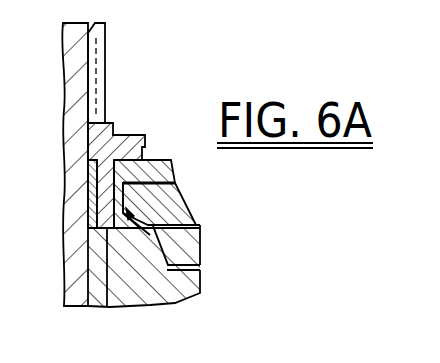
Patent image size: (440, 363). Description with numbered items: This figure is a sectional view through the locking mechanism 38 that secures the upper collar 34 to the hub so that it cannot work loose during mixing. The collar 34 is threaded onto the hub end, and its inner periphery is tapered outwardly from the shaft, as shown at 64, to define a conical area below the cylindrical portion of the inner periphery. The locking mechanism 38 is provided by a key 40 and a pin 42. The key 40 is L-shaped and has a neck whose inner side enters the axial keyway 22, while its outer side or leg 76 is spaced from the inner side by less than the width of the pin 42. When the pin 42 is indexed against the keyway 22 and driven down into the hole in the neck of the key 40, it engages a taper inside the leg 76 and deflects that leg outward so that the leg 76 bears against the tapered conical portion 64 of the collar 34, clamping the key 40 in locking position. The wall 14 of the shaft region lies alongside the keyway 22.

The wall 14 is at (67, 54).
The keyway 22 is at (98, 43).
The locking mechanism 38 is at (165, 147).
The pin 42 is at (120, 140).
The key 40 is at (158, 162).
The tapered inner periphery 64 is at (178, 203).
The outer side leg 76 is at (150, 224).
The hub locking ring 34 is at (188, 253).